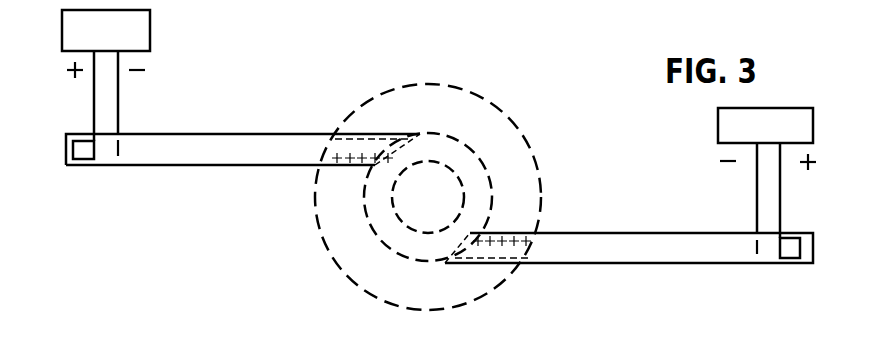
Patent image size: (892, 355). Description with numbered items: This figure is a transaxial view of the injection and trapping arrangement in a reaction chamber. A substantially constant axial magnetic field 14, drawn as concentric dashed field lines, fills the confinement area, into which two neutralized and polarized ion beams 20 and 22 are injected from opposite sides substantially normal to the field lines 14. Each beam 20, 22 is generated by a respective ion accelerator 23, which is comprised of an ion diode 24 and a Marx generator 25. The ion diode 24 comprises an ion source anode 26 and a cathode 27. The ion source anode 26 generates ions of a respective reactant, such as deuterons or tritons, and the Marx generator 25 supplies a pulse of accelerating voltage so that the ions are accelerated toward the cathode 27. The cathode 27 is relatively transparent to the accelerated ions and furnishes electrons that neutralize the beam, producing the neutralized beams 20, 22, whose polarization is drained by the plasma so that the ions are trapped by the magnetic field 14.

The axial magnetic field 14 is at (500, 113).
The neutralized ion beam 20 is at (202, 135).
The neutralized ion beam 22 is at (658, 233).
The ion accelerator 23 is at (140, 98).
The ion diode 24 is at (112, 182).
The Marx generator 25 is at (117, 40).
The ion source anode 26 is at (83, 155).
The cathode 27 is at (120, 151).